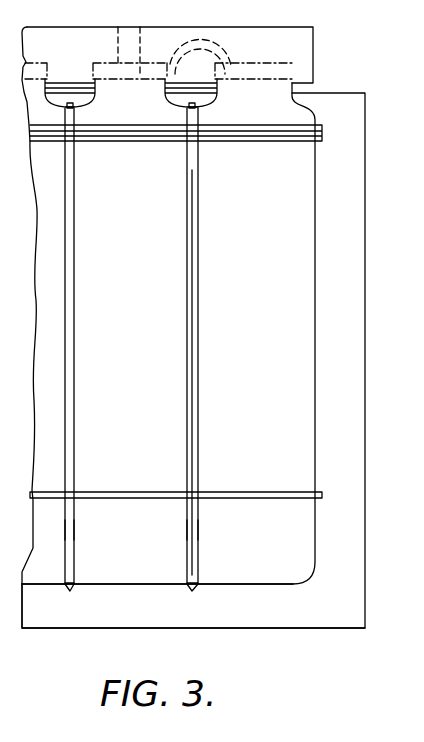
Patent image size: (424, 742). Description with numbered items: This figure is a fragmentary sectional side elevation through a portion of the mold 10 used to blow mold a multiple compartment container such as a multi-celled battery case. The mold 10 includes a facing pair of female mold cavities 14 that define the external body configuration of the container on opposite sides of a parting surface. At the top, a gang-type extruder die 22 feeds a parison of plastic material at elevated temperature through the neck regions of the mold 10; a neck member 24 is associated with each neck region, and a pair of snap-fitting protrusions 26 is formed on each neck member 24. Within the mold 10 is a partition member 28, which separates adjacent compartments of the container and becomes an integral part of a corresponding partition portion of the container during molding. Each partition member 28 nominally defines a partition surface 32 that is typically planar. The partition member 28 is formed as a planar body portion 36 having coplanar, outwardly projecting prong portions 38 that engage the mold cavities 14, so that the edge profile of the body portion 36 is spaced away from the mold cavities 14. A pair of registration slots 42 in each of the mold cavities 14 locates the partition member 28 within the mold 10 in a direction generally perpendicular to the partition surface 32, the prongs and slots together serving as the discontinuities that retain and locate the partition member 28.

The mold 10 is at (343, 646).
The female mold cavities 14 is at (90, 631).
The gang-type extruder die 22 is at (300, 27).
The neck member 24 is at (172, 50).
The snap-fitting protrusions 26 is at (165, 78).
The partition member 28 is at (187, 443).
The partition surface 32 is at (198, 262).
The planar body portion 36 is at (187, 531).
The prong portions 38 is at (68, 106).
The registration slots 42 is at (190, 107).